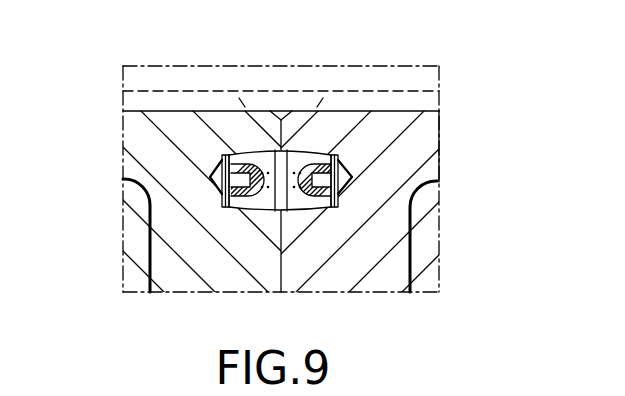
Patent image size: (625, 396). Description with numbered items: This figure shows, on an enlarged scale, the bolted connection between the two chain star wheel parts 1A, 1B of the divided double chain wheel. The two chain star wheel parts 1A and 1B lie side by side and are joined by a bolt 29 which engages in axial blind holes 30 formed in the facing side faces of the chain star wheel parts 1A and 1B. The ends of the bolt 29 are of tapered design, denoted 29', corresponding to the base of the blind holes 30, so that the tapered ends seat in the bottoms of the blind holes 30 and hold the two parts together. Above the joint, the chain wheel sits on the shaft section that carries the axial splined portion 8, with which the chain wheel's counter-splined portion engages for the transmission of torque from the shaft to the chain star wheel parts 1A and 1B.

The axial splined portion 8 is at (420, 104).
The bolt 29 is at (252, 258).
The screw tips 29' is at (284, 153).
The axial blind hole 30 is at (248, 152).
The chain star wheel part 1A is at (155, 250).
The chain star wheel part 1B is at (397, 222).